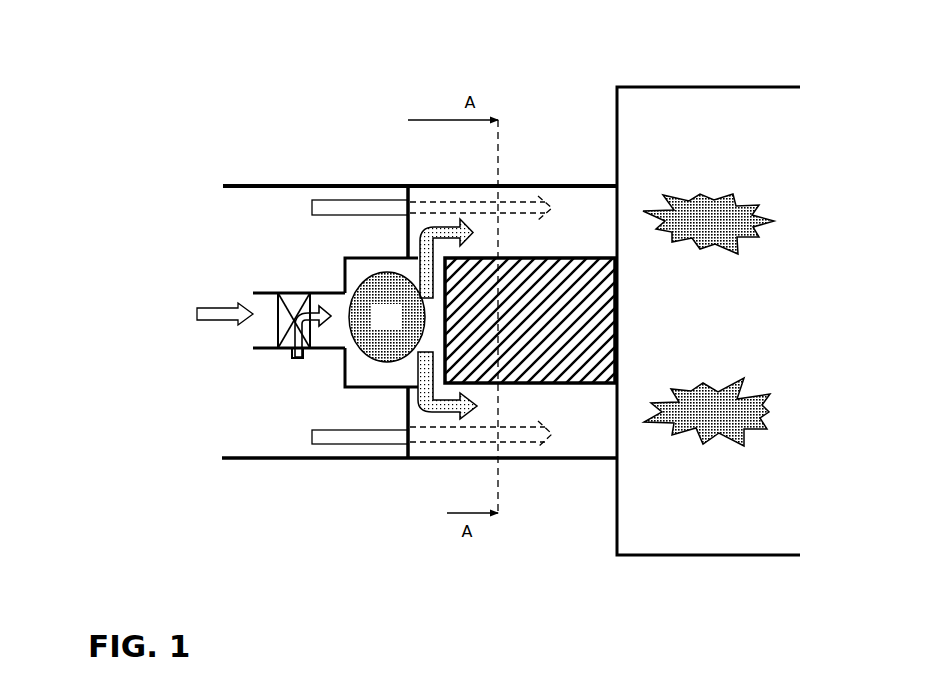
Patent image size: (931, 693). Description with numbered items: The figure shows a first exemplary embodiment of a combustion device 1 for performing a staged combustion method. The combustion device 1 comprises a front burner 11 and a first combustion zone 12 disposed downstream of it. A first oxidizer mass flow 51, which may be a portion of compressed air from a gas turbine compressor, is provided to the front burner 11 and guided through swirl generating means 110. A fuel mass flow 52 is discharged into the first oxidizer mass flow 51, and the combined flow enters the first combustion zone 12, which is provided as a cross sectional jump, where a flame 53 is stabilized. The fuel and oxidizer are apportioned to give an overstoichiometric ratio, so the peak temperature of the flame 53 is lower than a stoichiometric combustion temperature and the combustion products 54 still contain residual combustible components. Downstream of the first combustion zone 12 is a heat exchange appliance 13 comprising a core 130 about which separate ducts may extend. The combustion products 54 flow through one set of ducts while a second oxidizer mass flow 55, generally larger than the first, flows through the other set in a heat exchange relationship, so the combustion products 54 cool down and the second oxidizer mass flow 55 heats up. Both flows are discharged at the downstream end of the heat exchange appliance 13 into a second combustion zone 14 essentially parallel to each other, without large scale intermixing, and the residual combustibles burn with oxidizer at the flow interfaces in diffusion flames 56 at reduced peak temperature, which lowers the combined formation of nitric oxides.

The combustion device 1 is at (333, 97).
The front burner 11 is at (256, 351).
The swirl generating means 110 is at (290, 351).
The first combustion zone 12 is at (380, 256).
The heat exchange appliance 13 is at (567, 428).
The core of heat exchange appliance 130 is at (618, 311).
The second combustion zone 14 is at (786, 252).
The first oxidizer mass flow 51 is at (202, 327).
The fuel mass flow 52 is at (320, 327).
The flame 53 is at (376, 326).
The combustion products 54 is at (445, 228).
The second oxidizer mass flow 55 is at (327, 199).
The flame 56 is at (727, 240).